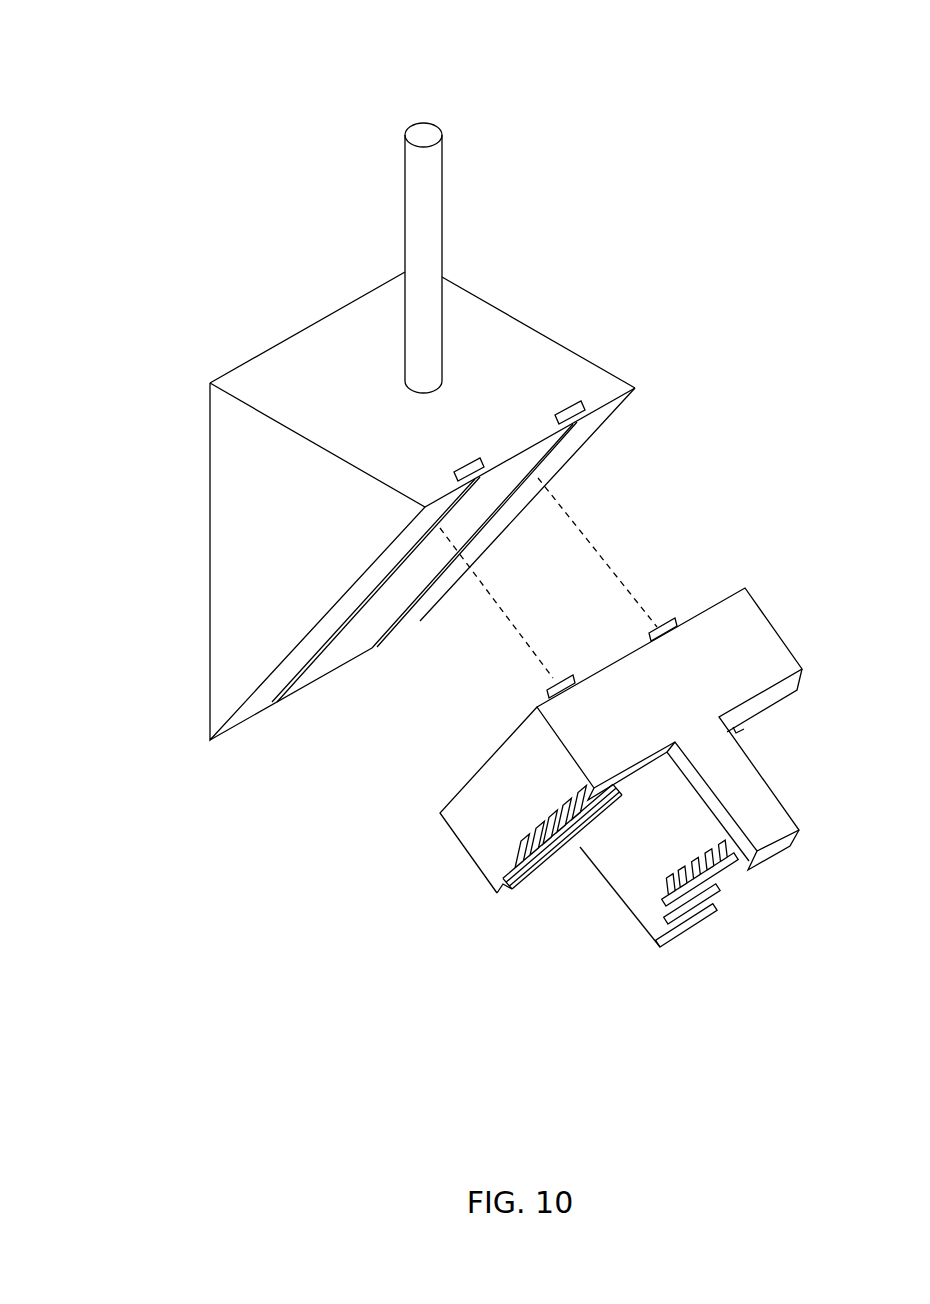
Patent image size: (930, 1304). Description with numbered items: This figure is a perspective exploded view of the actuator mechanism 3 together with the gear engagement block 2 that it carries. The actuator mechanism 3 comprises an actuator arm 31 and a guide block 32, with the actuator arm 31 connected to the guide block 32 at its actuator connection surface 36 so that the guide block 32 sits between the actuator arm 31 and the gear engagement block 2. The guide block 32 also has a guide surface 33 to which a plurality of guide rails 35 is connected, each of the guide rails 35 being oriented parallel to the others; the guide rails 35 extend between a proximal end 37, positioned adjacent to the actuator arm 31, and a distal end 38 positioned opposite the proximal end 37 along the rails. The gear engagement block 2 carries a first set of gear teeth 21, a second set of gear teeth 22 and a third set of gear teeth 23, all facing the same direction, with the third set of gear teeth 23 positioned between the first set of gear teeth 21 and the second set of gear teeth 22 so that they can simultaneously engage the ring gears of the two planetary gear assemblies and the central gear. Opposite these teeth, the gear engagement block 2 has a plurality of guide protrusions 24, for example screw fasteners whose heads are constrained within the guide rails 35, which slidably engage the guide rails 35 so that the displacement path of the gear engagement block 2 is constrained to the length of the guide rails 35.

The gear engagement block 2 is at (853, 647).
The actuator mechanism 3 is at (693, 78).
The first set of gear teeth 21 is at (800, 702).
The second set of gear teeth 22 is at (549, 881).
The third set of gear teeth 23 is at (703, 946).
The guide protrusions 24 is at (650, 631).
The actuator arm 31 is at (432, 183).
The guide block 32 is at (177, 462).
The guide surface 33 is at (393, 597).
The guide rails 35 is at (572, 408).
The actuator connection surface 36 is at (333, 357).
The proximal end 37 is at (657, 387).
The distal end 38 is at (163, 738).